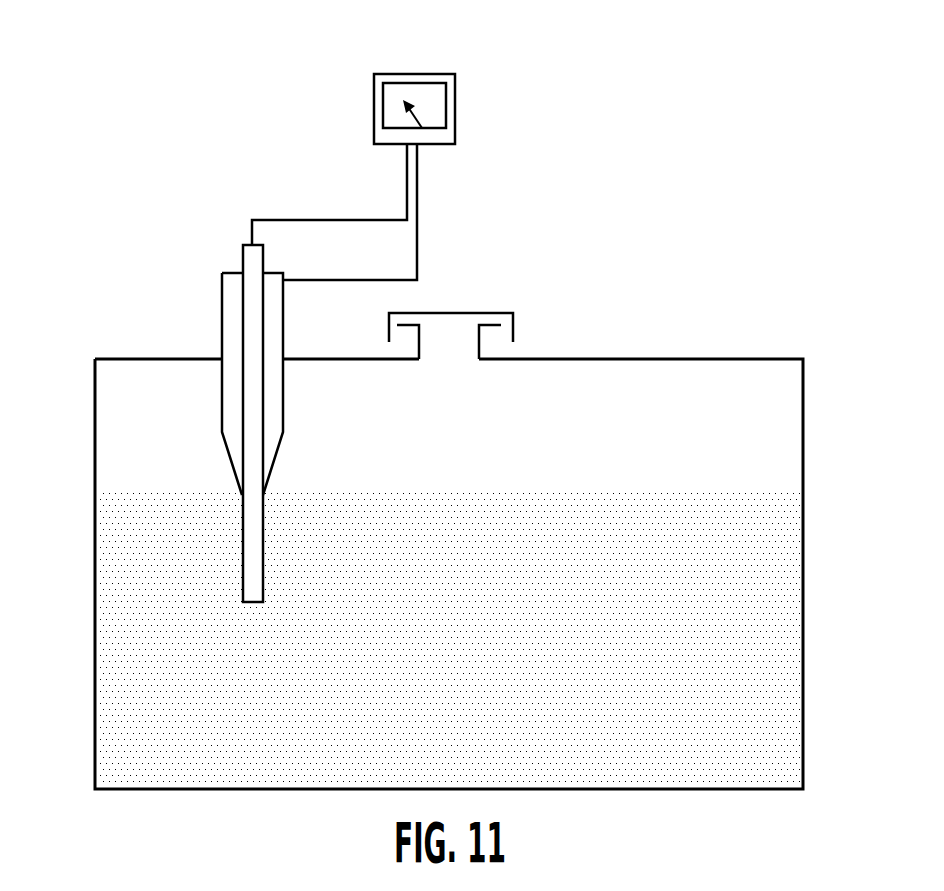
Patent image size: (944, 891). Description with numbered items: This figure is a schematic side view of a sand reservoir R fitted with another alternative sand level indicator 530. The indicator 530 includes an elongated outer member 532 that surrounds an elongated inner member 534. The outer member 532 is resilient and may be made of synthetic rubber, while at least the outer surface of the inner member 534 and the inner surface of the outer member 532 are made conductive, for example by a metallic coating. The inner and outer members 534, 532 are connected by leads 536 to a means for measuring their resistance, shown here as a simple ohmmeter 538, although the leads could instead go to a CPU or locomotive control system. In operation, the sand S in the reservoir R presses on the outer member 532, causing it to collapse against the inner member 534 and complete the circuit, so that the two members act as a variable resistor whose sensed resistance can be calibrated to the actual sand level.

The sand reservoir R is at (789, 338).
The sand S is at (476, 638).
The level indicator 530 is at (154, 262).
The elongated outer member 532 is at (221, 346).
The elongated inner member 534 is at (250, 378).
The leads 536 is at (418, 252).
The ohmmeter 538 is at (448, 127).